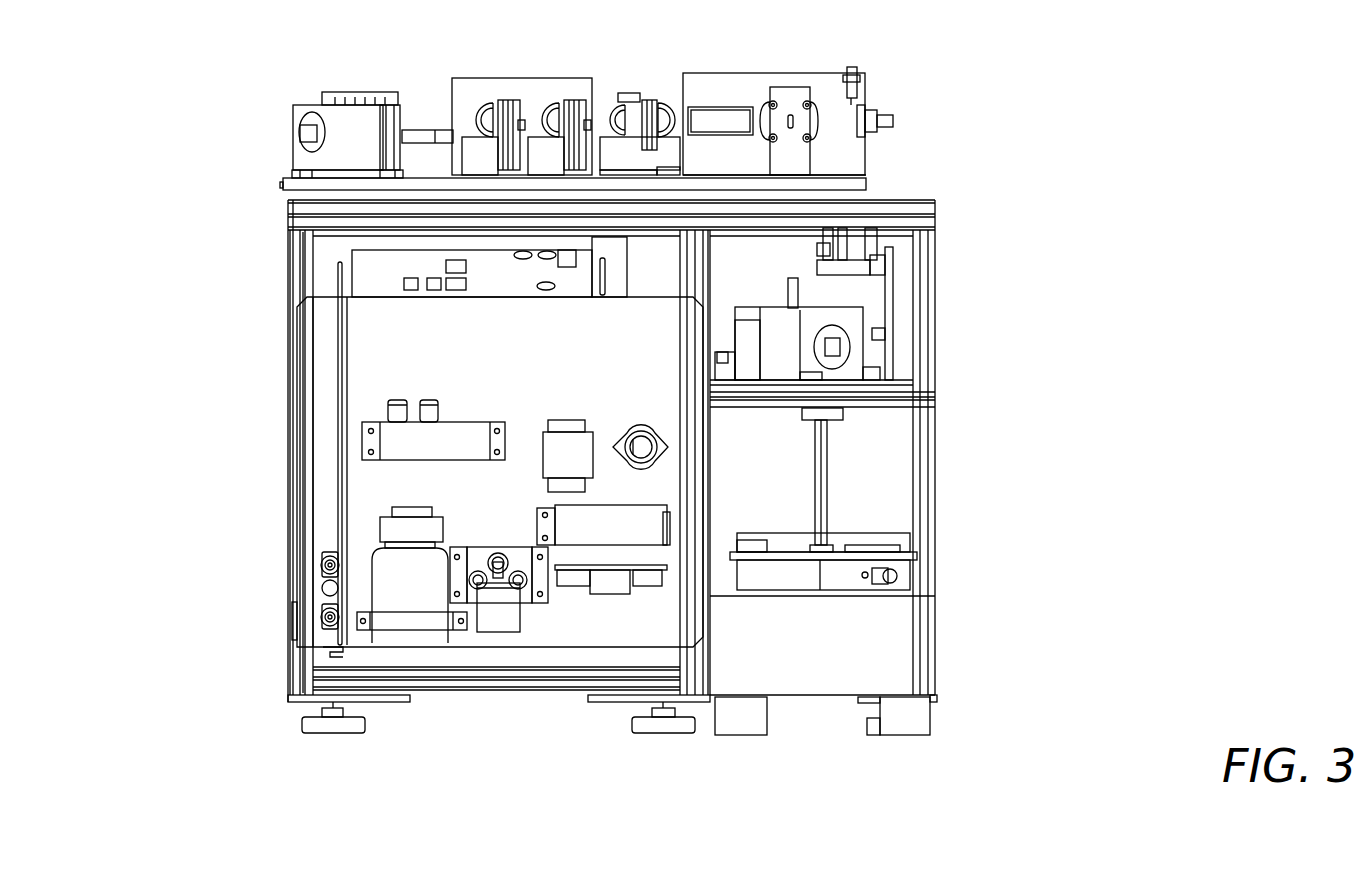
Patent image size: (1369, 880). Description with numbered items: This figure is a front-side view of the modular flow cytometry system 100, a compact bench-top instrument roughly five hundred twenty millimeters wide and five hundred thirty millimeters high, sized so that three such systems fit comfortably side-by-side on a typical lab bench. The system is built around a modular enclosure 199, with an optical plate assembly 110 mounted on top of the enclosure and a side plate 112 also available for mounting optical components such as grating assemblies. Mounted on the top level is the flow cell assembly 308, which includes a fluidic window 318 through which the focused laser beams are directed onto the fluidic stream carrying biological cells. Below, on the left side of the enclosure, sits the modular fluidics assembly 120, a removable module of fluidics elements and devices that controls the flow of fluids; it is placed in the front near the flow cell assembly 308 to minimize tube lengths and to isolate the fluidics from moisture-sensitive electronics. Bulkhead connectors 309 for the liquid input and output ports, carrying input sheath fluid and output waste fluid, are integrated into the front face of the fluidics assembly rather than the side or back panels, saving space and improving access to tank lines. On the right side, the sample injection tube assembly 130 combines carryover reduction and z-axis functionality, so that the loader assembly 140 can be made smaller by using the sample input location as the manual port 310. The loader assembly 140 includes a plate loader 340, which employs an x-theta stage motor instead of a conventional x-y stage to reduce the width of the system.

The modular flow cytometry system 100 is at (309, 770).
The optical plate assembly 110 is at (674, 118).
The side plate 112 is at (286, 187).
The modular fluidics assembly 120 is at (430, 442).
The sample injection tube (SIT) assembly 130 is at (870, 268).
The loader assembly 140 is at (918, 461).
The modular enclosure 199 is at (292, 247).
The flow cell assembly 308 is at (802, 121).
The bulkhead connectors 309 is at (320, 618).
The manual port 310 is at (830, 432).
The fluidic window 318 is at (768, 103).
The plate loader 340 is at (912, 575).